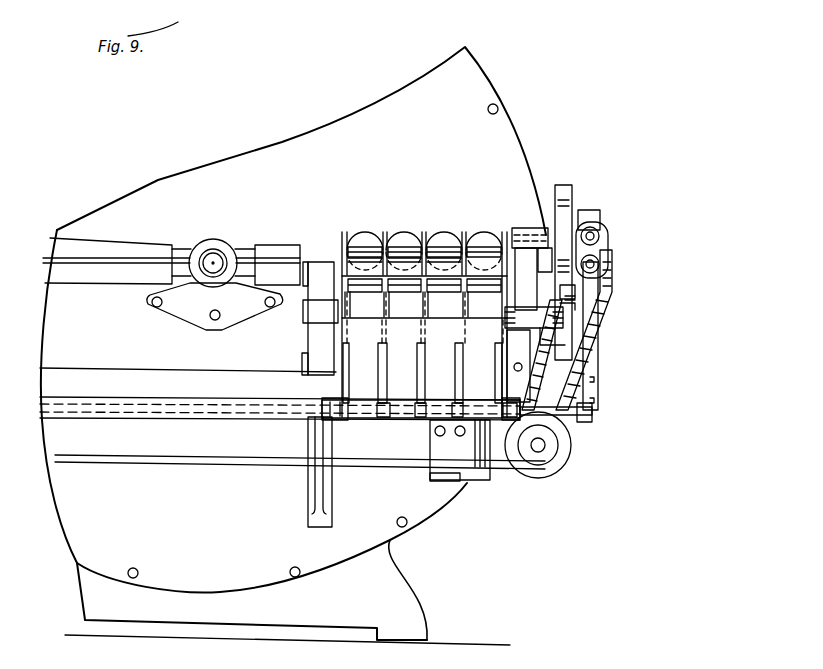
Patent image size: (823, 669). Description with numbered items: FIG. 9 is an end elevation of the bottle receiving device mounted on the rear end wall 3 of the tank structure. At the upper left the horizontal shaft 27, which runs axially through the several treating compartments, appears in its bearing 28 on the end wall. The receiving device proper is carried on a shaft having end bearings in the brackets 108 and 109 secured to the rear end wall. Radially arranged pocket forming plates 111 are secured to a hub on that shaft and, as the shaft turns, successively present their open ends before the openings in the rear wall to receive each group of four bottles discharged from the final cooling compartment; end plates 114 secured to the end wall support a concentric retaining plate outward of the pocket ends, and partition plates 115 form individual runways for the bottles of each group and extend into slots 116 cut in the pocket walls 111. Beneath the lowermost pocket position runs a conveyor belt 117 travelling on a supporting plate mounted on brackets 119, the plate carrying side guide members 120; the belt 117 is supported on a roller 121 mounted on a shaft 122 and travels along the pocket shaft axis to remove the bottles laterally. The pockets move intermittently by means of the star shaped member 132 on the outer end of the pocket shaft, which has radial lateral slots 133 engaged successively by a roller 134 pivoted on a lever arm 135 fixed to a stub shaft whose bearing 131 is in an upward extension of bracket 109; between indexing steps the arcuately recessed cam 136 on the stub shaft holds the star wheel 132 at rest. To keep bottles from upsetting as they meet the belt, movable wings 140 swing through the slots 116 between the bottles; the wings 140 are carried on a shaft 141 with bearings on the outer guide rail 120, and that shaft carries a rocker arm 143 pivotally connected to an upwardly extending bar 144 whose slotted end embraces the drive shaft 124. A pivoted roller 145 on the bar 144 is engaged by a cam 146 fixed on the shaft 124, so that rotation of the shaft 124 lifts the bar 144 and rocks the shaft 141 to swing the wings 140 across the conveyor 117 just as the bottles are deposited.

The rear end wall 3 is at (350, 130).
The horizontal shaft 27 is at (214, 262).
The bearing 28 is at (201, 291).
The bracket 108 is at (316, 341).
The bracket 109 is at (527, 352).
The pocket forming plates 111 is at (360, 268).
The end plates 114 is at (343, 240).
The partition plates 115 is at (418, 240).
The slots 116 is at (470, 240).
The conveyor belt 117 is at (202, 468).
The brackets 119 is at (308, 519).
The side guide members 120 is at (80, 374).
The roller 121 is at (571, 462).
The shaft 122 is at (540, 452).
The shaft 124 is at (613, 262).
The bearing 131 is at (525, 228).
The star shaped member 132 is at (565, 343).
The lateral slots 133 is at (575, 302).
The roller 134 is at (570, 310).
The lever arm 135 is at (575, 292).
The arcuately recessed cam 136 is at (563, 185).
The movable wings 140 is at (417, 392).
The shaft 141 is at (362, 408).
The rocker arm 143 is at (592, 411).
The bar 144 is at (598, 325).
The pivoted roller 145 is at (588, 226).
The cam 146 is at (612, 250).